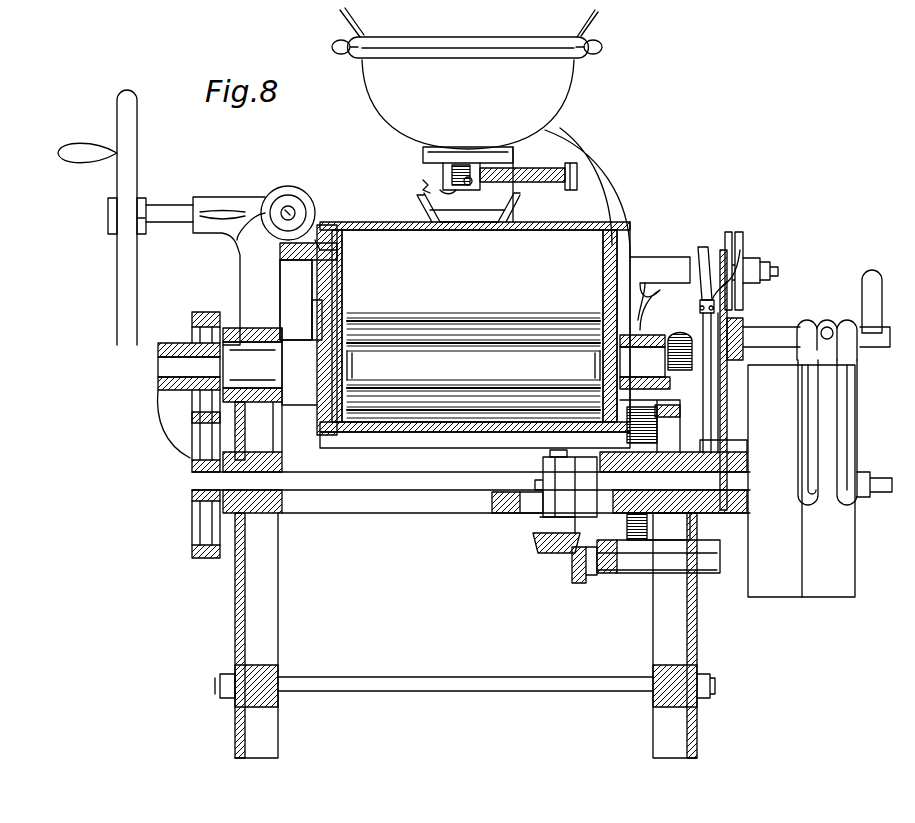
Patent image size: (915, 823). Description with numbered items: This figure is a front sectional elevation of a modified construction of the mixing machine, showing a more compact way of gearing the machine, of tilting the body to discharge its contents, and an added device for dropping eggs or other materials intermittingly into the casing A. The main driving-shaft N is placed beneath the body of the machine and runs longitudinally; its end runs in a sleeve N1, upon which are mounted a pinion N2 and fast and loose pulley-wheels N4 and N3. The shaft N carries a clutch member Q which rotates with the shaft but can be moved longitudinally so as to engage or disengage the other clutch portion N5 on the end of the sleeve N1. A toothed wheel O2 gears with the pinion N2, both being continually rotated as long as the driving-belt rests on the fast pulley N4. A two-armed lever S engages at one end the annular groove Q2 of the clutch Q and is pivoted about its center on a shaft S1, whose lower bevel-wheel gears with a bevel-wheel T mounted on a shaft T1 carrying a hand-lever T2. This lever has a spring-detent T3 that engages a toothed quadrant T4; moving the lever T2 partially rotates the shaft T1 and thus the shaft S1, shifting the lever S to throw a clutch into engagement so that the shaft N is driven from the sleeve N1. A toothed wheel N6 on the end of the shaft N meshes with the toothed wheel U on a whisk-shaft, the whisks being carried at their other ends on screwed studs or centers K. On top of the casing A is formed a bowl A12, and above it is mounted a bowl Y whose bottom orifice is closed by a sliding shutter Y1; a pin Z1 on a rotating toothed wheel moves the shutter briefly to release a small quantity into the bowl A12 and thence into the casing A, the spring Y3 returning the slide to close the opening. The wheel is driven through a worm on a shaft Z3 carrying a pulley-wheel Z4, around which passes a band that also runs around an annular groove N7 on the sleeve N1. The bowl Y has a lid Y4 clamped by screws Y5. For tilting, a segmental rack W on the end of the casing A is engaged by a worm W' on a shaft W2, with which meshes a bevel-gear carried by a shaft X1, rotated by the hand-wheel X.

The hand-wheel X is at (128, 112).
The shaft X1 is at (167, 218).
The shaft W2 is at (267, 207).
The worm W' is at (288, 196).
The segmental rack W is at (324, 211).
The bowl Y is at (468, 104).
The lid Y4 is at (474, 40).
The screws Y5 is at (612, 46).
The sliding shutter Y1 is at (443, 174).
The pin Z1 is at (478, 170).
The spring Y3 is at (578, 158).
The bowl A12 is at (435, 211).
The casing A is at (612, 270).
The toothed wheel U is at (190, 314).
The toothed wheel N6 is at (192, 549).
The main driving-shaft N is at (380, 478).
The two-armed lever S is at (550, 453).
The clutch member Q is at (582, 480).
The annular groove Q2 is at (520, 503).
The shaft S1 is at (570, 553).
The bevel-wheel T is at (584, 565).
The clutch N5 is at (598, 530).
The pinion N2 is at (620, 562).
The shaft T1 is at (648, 562).
The sleeve N1 is at (748, 457).
The annular groove N7 is at (731, 452).
The toothed wheel O2 is at (657, 408).
The screwed studs or centers K is at (678, 347).
The hand-lever T2 is at (705, 257).
The spring-detent T3 is at (731, 237).
The pulley-wheel Z4 is at (745, 240).
The shaft Z3 is at (749, 266).
The toothed quadrant T4 is at (742, 334).
The fast pulley-wheel N4 is at (801, 481).
The loose pulley-wheel N3 is at (845, 467).